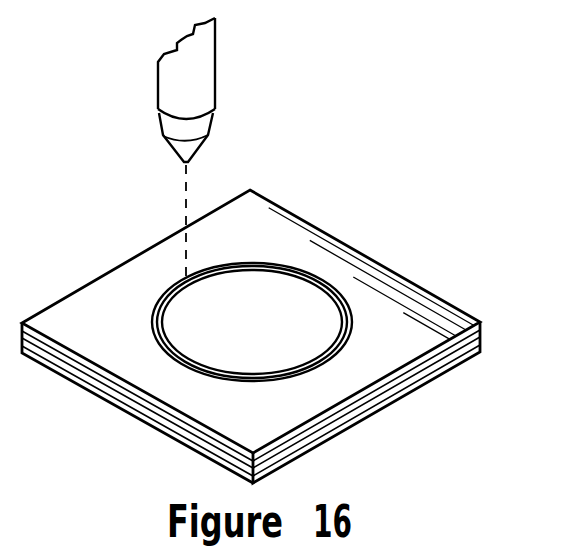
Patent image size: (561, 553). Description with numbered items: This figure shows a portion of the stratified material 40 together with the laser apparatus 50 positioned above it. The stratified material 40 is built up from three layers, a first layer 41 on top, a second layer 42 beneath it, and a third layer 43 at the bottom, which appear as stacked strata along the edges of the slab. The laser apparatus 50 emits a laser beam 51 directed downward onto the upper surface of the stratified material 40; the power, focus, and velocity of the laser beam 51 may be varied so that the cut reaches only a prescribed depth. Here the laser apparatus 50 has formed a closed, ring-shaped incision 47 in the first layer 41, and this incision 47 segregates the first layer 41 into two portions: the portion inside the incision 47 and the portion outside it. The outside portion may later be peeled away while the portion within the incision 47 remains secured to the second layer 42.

The stratified material 40 is at (424, 265).
The first layer 41 is at (447, 297).
The second layer 42 is at (482, 334).
The third layer 43 is at (457, 368).
The incision 47 is at (152, 322).
The laser apparatus 50 is at (138, 83).
The laser beam 51 is at (182, 193).